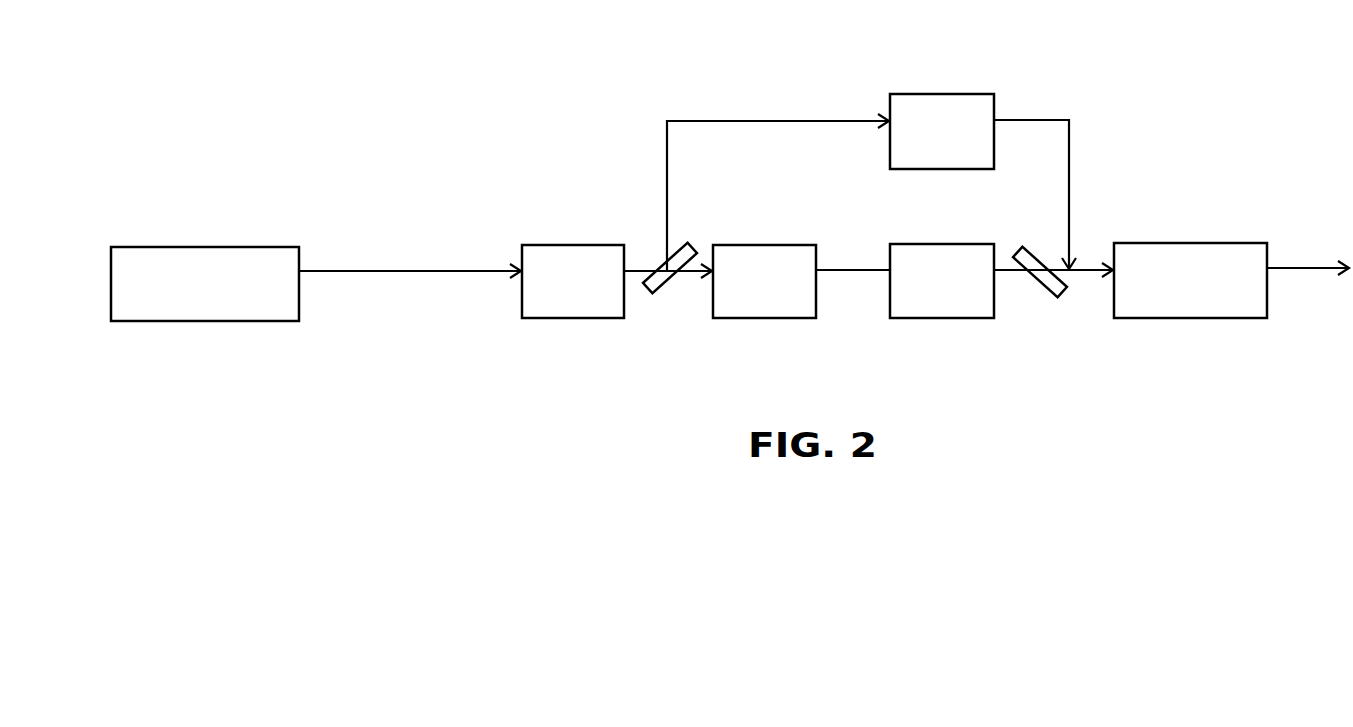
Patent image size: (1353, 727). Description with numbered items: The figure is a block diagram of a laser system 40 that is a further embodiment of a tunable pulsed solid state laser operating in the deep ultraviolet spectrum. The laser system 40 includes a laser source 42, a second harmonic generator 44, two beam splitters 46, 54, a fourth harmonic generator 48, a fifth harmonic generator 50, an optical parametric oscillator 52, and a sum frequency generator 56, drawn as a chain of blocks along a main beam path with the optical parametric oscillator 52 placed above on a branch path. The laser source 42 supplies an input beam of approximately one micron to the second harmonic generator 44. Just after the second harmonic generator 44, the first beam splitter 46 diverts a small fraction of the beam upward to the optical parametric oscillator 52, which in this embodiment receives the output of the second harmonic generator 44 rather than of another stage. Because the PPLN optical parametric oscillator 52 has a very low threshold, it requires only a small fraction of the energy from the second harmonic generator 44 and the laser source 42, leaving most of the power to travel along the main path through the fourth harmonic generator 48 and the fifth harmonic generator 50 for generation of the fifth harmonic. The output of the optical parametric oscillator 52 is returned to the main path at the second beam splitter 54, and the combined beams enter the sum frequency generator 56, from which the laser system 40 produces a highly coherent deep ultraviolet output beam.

The laser system 40 is at (640, 69).
The laser source 42 is at (193, 240).
The second harmonic generator 44 is at (558, 331).
The beam splitter 46 is at (666, 295).
The fourth harmonic generator 48 is at (778, 332).
The fifth harmonic generator 50 is at (955, 330).
The optical parametric oscillator 52 is at (973, 86).
The beam splitter 54 is at (1042, 296).
The sum frequency generator 56 is at (1191, 336).